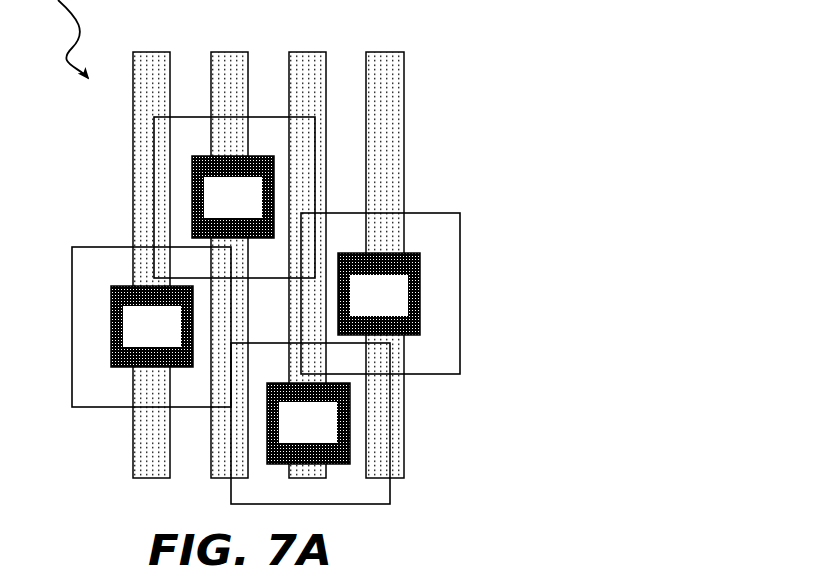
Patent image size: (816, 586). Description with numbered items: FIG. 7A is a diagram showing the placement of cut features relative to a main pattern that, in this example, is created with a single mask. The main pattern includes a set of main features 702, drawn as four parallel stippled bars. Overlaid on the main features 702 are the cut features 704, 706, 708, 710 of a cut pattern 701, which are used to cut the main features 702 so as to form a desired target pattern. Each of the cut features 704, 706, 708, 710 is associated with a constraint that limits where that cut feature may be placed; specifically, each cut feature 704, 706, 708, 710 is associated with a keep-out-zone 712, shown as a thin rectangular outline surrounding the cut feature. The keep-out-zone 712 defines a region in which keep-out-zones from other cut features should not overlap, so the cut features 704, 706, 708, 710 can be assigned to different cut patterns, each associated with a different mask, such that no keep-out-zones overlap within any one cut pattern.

The cut pattern 701 is at (459, 174).
The main features 702 is at (152, 52).
The cut feature 704 is at (233, 197).
The cut feature 706 is at (152, 326).
The cut feature 708 is at (379, 294).
The cut feature 710 is at (308, 423).
The keep-out-zone 712 is at (96, 247).